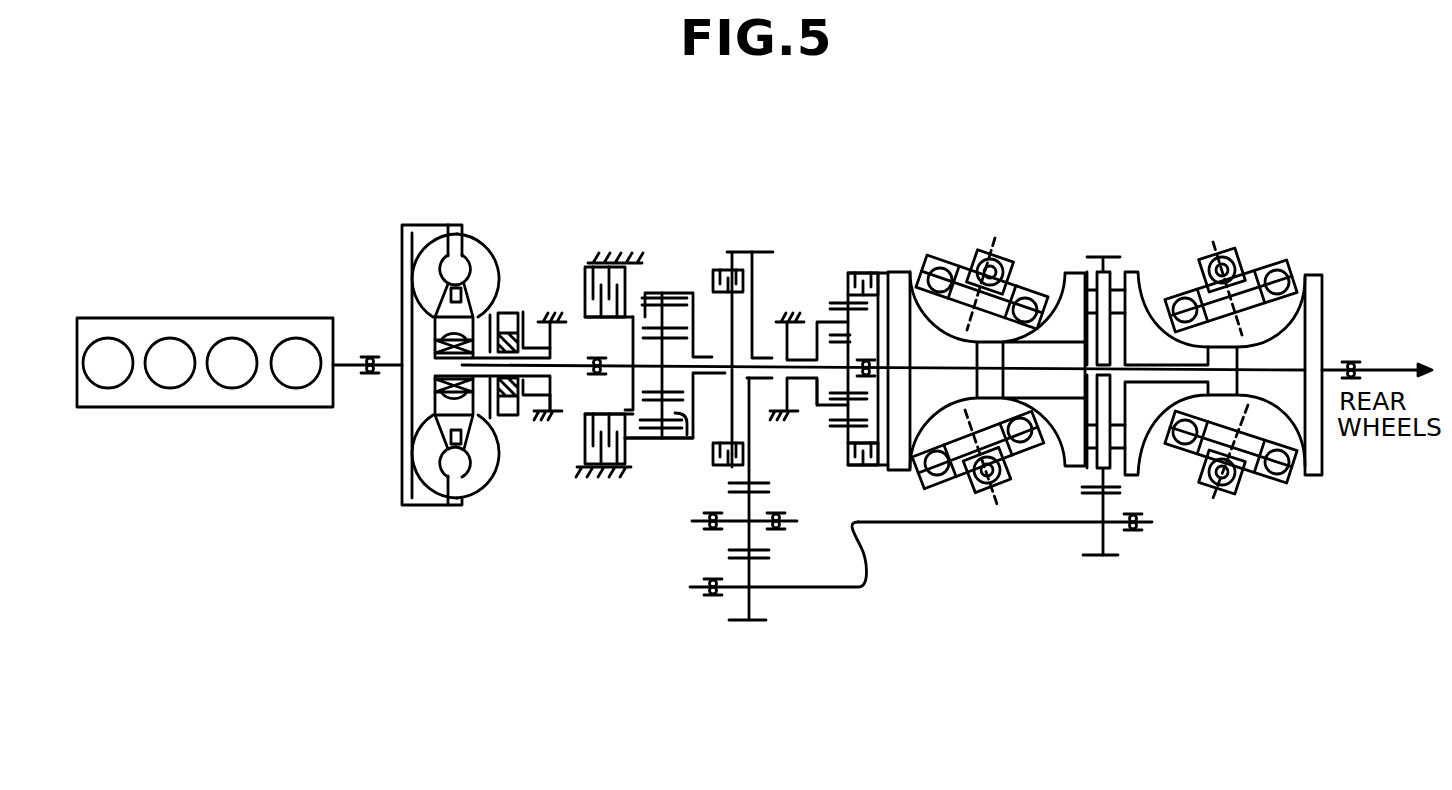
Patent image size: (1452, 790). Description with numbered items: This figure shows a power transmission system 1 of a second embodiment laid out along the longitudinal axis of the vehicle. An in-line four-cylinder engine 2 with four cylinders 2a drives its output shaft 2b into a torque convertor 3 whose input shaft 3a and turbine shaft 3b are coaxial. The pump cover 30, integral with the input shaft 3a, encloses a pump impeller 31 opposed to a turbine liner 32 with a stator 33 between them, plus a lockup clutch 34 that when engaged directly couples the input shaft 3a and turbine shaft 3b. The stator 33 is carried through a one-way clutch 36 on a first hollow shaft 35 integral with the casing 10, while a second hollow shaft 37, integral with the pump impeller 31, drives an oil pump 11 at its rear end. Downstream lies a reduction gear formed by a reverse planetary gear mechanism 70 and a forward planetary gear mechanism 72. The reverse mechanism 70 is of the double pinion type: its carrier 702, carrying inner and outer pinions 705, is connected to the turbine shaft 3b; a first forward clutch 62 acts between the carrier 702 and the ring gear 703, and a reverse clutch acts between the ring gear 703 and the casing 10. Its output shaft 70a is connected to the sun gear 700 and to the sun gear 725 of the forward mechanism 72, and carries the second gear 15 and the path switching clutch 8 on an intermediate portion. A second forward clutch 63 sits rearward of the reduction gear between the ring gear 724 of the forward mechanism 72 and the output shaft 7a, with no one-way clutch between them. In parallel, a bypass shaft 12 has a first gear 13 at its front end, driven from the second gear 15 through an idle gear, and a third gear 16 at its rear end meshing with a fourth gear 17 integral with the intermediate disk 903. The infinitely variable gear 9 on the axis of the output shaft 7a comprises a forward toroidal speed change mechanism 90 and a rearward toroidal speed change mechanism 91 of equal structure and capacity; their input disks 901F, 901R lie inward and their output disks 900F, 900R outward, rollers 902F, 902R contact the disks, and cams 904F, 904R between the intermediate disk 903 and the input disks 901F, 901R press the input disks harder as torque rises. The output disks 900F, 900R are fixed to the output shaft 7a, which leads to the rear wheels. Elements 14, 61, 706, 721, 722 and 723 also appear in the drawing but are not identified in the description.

The power transmission system 1 is at (829, 166).
The in-line four-cylinder engine 2 is at (236, 314).
The cylinders 2a is at (168, 382).
The output shaft 2b is at (348, 380).
The torque convertor 3 is at (468, 207).
The input shaft 3a is at (383, 378).
The turbine shaft 3b is at (546, 433).
The pump cover 30 is at (402, 264).
The pump impeller 31 is at (473, 250).
The turbine liner 32 is at (443, 245).
The stator 33 is at (460, 288).
The lockup clutch 34 is at (430, 225).
The first hollow shaft 35 is at (515, 318).
The one-way clutch 36 is at (435, 325).
The second hollow shaft 37 is at (473, 468).
The casing 10 is at (550, 315).
The oil pump 11 is at (508, 418).
The bypass shaft 12 is at (900, 523).
The first gear 13 is at (730, 621).
The gear 14 is at (728, 548).
The second gear 15 is at (757, 483).
The third gear 16 is at (1094, 557).
The fourth gear 17 is at (1120, 485).
The first forward clutch 62 is at (590, 305).
The clutch (friction engaging element 6) 61 is at (650, 295).
The second forward clutch 63 is at (855, 273).
The reverse planetary gear mechanism 70 is at (653, 452).
The output shaft 70a is at (675, 362).
The sun gear 700 is at (652, 378).
The carrier 702 is at (631, 318).
The ring gear 703 is at (655, 293).
The inner and outer pinions 705 is at (683, 445).
The pinion gear 706 is at (682, 330).
The path switching clutch 8 is at (733, 252).
The forward planetary gear mechanism 72 is at (828, 290).
The clutch hub 721 is at (826, 410).
The clutch support 722 is at (790, 312).
The connecting member 723 is at (808, 554).
The ring gear 724 is at (852, 428).
The sun gear 725 is at (868, 332).
The infinitely variable gear 9 is at (1094, 232).
The forward toroidal speed change mechanism 90 is at (988, 236).
The rearward toroidal speed change mechanism 91 is at (1268, 245).
The output disk 900F is at (918, 273).
The output disk 900R is at (1310, 275).
The input disk 901F is at (998, 480).
The input disk 901R is at (1135, 298).
The rollers 902F is at (1010, 262).
The rollers 902R is at (1246, 237).
The intermediate disk 903 is at (1130, 273).
The cam 904F is at (1045, 369).
The cam 904R is at (1165, 373).
The output shaft 7a is at (1383, 364).